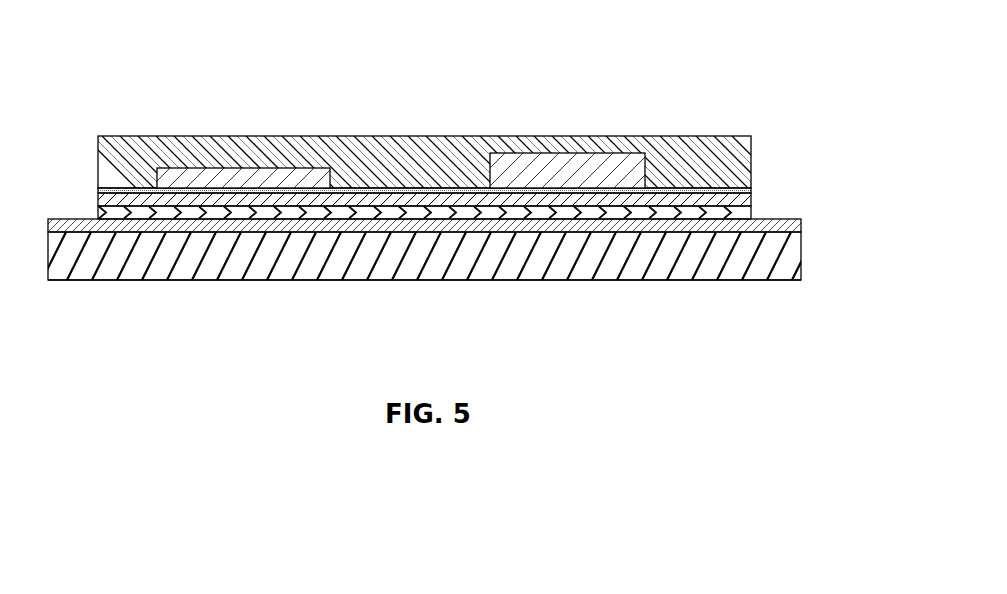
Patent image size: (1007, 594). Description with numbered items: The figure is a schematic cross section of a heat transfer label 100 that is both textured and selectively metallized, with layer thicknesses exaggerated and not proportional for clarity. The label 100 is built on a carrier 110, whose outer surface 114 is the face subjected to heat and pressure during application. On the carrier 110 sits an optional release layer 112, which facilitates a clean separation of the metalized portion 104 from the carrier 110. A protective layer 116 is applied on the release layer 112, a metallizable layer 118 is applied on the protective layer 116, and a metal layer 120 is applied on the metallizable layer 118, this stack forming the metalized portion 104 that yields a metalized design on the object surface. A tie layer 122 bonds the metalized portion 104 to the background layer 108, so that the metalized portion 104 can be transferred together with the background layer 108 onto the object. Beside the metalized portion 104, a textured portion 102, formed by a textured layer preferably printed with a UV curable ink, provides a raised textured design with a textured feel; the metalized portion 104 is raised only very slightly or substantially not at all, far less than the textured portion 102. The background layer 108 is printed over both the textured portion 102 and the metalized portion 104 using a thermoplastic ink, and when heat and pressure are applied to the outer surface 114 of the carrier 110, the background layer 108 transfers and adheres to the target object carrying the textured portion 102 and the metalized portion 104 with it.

The heat transfer label 100 is at (708, 55).
The textured portion 102 is at (580, 160).
The metalized portion 104 is at (237, 176).
The background layer 108 is at (752, 145).
The carrier 110 is at (797, 264).
The release layer 112 is at (800, 227).
The outer surface 114 is at (660, 281).
The protective layer 116 is at (752, 213).
The metallizable layer 118 is at (752, 194).
The metal layer 120 is at (752, 189).
The tie layer 122 is at (302, 173).